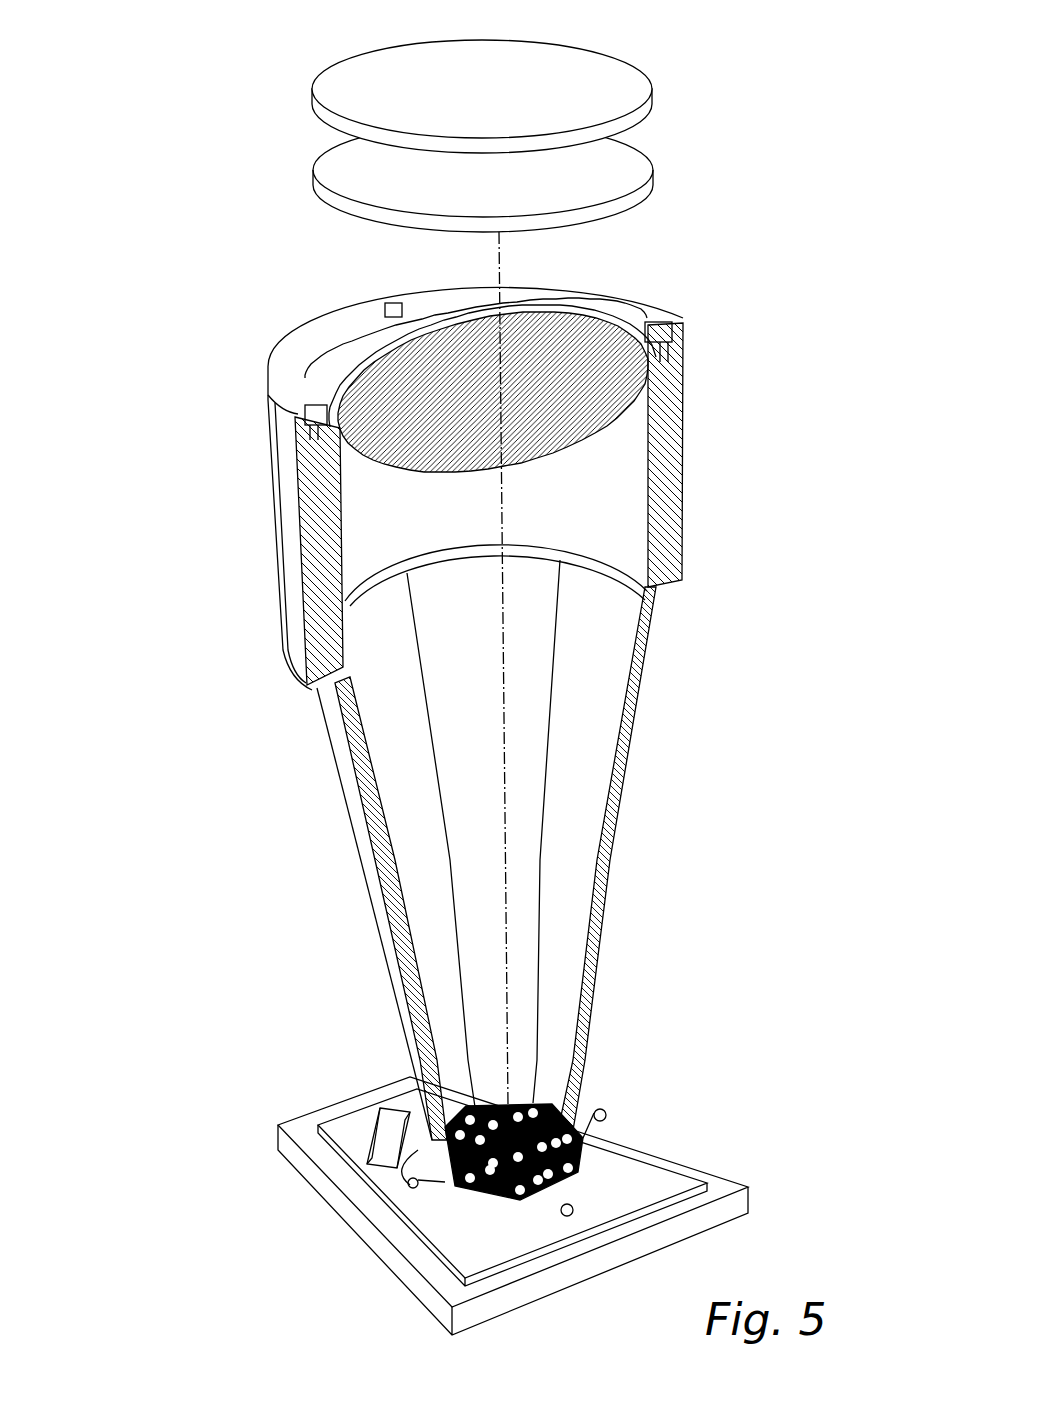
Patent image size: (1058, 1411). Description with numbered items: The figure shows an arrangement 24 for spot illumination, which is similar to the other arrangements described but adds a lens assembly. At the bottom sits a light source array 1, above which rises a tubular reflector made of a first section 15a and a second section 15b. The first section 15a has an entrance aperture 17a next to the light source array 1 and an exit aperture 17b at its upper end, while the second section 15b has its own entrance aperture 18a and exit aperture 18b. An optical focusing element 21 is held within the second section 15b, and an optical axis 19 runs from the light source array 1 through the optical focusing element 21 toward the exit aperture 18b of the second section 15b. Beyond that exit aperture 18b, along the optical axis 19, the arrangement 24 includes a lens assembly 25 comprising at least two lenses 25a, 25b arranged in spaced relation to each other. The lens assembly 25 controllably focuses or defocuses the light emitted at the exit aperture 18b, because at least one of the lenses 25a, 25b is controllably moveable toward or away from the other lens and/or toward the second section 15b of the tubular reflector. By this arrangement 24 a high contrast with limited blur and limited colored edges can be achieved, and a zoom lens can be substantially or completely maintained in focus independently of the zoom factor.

The light source array 1 is at (570, 1147).
The first section of tubular reflector 15a is at (373, 902).
The second section of tubular reflector 15b is at (287, 533).
The entrance aperture of first section 17a is at (590, 1080).
The exit aperture of first section 17b is at (632, 585).
The entrance aperture of second section 18a is at (637, 547).
The exit aperture of second section 18b is at (640, 320).
The optical axis 19 is at (500, 267).
The optical focusing element 21 is at (620, 367).
The arrangement 24 is at (692, 859).
The lens assembly 25 is at (475, 118).
The lens 25a is at (332, 166).
The lens 25b is at (515, 78).